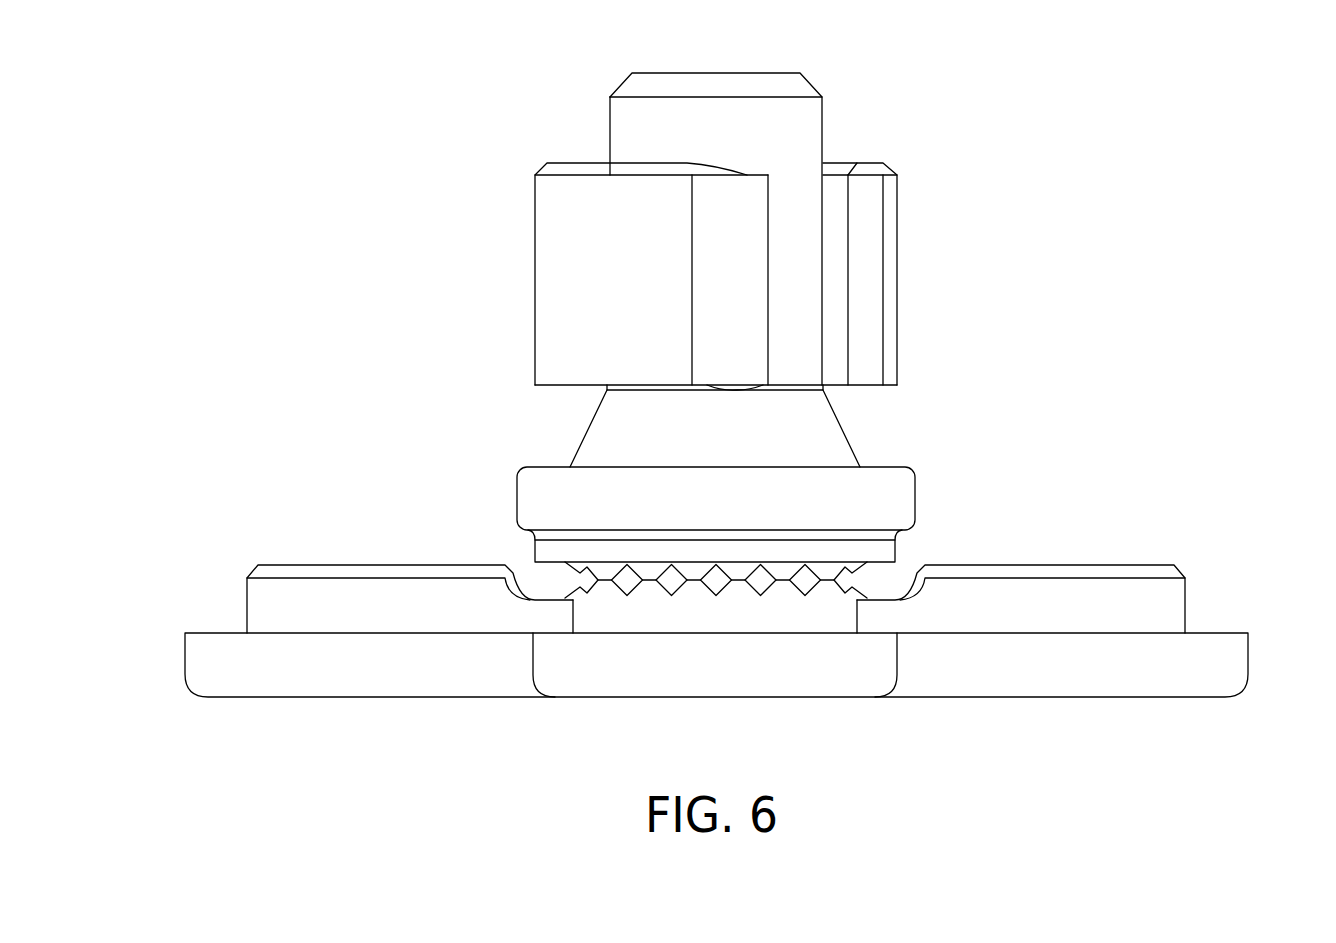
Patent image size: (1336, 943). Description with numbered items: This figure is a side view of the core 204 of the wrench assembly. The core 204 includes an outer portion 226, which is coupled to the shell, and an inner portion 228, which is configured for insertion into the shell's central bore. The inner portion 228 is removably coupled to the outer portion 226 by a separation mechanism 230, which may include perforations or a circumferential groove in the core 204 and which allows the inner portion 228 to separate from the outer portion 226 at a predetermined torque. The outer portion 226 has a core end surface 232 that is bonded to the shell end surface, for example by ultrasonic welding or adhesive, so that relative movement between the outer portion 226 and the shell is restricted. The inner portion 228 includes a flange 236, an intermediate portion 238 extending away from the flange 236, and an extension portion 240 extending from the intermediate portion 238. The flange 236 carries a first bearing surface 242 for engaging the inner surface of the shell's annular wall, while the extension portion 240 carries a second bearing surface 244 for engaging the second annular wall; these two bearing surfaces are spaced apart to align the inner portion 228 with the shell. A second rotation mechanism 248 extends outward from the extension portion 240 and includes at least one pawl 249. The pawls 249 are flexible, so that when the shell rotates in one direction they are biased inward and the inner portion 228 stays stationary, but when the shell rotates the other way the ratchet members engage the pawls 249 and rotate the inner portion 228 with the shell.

The core 204 is at (403, 108).
The outer portion 226 is at (325, 715).
The inner portion 228 is at (482, 305).
The separation mechanism 230 is at (868, 580).
The core end surface 232 is at (210, 632).
The flange 236 is at (917, 503).
The intermediate portion 238 is at (840, 420).
The extension portion 240 is at (750, 110).
The first bearing surface 242 is at (517, 497).
The second bearing surface 244 is at (608, 130).
The second rotation mechanism 248 is at (540, 195).
The pawl 249 is at (872, 205).